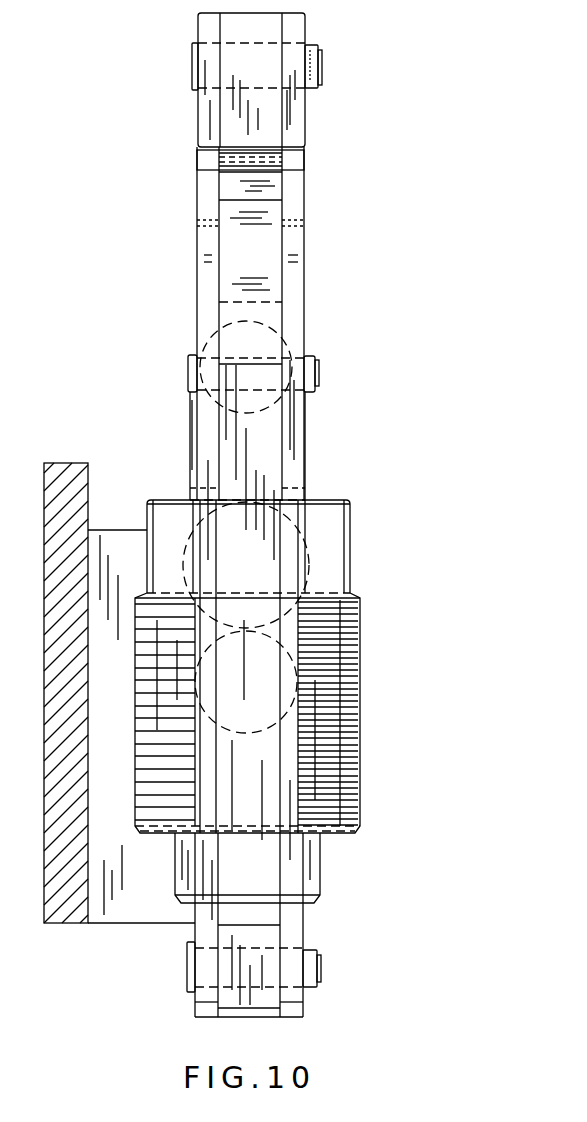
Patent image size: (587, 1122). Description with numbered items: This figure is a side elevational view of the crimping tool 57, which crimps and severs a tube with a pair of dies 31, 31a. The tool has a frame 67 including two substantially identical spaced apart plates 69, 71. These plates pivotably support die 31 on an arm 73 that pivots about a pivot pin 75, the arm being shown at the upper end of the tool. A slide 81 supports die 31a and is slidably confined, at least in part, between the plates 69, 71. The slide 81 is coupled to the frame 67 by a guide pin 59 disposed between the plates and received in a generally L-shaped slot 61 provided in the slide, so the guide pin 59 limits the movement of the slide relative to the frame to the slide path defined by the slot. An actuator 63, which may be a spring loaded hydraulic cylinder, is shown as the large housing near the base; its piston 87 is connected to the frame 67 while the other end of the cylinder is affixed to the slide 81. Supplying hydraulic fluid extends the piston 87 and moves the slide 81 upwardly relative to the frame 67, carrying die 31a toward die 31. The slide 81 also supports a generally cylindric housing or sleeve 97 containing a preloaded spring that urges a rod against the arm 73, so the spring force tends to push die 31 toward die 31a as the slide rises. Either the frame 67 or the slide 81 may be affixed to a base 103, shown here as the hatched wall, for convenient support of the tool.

The crimping tool 57 is at (128, 86).
The pivot pin 75 is at (322, 64).
The arm 73 is at (262, 116).
The die 31 is at (235, 167).
The die 31a is at (235, 188).
The plate 69 is at (197, 258).
The plate 71 is at (304, 258).
The L-shaped slot 61 is at (236, 306).
The guide pin 59 is at (316, 372).
The slide 81 is at (236, 440).
The sleeve 97 is at (306, 442).
The actuator 63 is at (358, 762).
The piston 87 is at (320, 866).
The frame 67 is at (300, 1004).
The base 103 is at (70, 918).